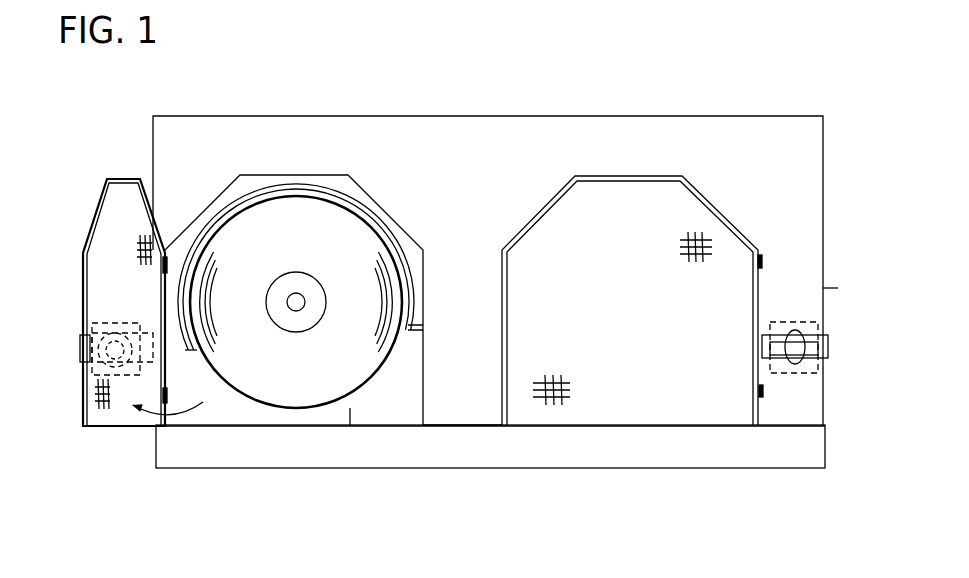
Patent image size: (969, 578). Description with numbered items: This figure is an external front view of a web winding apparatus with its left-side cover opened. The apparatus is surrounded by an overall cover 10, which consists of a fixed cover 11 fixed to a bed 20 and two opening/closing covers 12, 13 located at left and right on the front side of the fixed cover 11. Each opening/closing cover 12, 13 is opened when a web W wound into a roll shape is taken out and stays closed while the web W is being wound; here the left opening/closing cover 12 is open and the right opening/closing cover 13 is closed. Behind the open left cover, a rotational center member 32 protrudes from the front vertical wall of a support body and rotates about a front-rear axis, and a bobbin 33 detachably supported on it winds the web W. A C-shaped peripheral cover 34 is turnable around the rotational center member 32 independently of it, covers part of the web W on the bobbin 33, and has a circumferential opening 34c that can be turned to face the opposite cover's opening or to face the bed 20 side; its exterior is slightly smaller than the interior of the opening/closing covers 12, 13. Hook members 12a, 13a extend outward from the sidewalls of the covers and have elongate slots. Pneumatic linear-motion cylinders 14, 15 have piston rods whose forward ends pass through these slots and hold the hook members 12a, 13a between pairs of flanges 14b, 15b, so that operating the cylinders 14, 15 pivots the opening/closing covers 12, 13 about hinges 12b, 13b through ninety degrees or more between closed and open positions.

The overall cover 10 is at (778, 413).
The fixed cover 11 is at (488, 410).
The opening/closing cover 12 is at (130, 426).
The hook member 12a is at (82, 372).
The hinge 12b is at (164, 268).
The opening/closing cover 13 is at (643, 408).
The hook member 13a is at (823, 348).
The hinge 13b is at (761, 260).
The pneumatic linear-motion cylinder 14 is at (87, 325).
The flange 14b is at (117, 335).
The pneumatic linear-motion cylinder 15 is at (782, 320).
The flange 15b is at (793, 335).
The bed 20 is at (193, 468).
The rotational center member 32 is at (303, 305).
The bobbin 33 is at (297, 310).
The peripheral cover 34 is at (413, 298).
The circumferential opening 34c is at (399, 360).
The web W is at (263, 408).